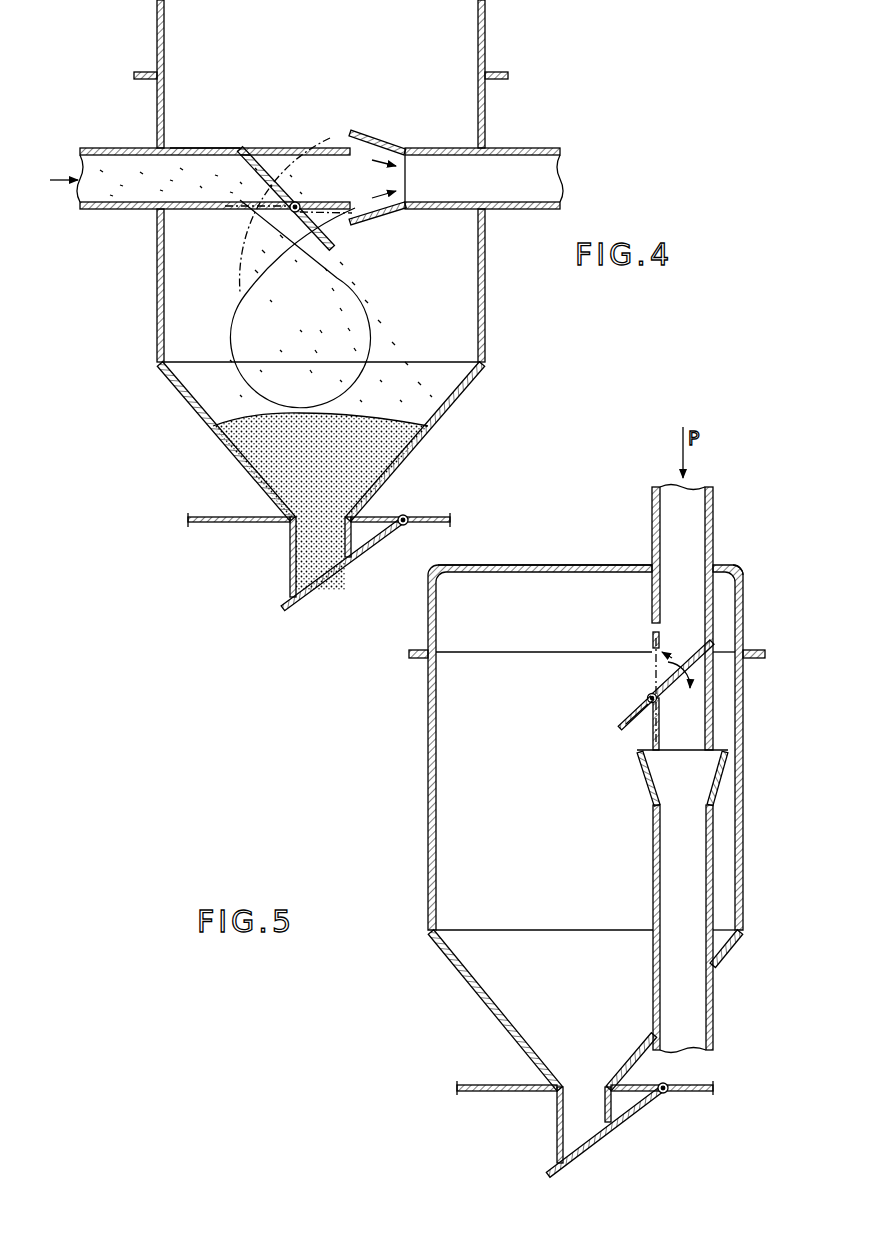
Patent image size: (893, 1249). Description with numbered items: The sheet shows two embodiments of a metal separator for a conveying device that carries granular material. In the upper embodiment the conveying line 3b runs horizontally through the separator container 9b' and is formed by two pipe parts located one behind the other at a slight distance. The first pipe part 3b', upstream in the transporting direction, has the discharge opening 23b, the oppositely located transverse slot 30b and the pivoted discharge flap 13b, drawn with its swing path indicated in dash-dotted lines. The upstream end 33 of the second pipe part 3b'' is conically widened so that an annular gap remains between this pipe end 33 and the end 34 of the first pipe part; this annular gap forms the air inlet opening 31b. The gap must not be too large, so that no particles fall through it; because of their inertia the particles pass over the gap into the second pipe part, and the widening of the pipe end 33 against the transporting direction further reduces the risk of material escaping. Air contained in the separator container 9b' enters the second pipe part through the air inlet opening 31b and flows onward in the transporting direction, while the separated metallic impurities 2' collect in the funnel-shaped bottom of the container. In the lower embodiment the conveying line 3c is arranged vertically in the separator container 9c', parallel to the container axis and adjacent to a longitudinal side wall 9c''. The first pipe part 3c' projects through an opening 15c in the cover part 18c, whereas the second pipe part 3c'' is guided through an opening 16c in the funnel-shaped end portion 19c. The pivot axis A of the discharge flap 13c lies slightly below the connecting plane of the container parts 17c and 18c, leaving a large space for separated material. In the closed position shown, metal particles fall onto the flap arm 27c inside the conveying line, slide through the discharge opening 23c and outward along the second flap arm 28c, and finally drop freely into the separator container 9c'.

In FIG. 4, the conveying line 3b is at (194, 210).
In FIG. 4, the first pipe part 3b' is at (205, 117).
In FIG. 4, the second pipe part 3b'' is at (484, 148).
In FIG. 4, the transverse slot 30b is at (240, 147).
In FIG. 4, the discharge flap 13b is at (242, 297).
In FIG. 4, the end of the first pipe part 34 is at (332, 138).
In FIG. 4, the upstream end of the second pipe part 33 is at (370, 134).
In FIG. 4, the separator container 9b' is at (341, 181).
In FIG. 4, the discharge opening 23b is at (226, 212).
In FIG. 4, the air inlet opening 31b is at (362, 226).
In FIG. 4, the metallic impurities 2' is at (320, 476).
In FIG. 5, the opening in the cover part 15c is at (651, 562).
In FIG. 5, the conveying line 3c is at (721, 618).
In FIG. 5, the cover part 18c is at (744, 583).
In FIG. 5, the first pipe part 3c' is at (725, 672).
In FIG. 5, the discharge opening 23c is at (652, 652).
In FIG. 5, the flap arm 27c is at (690, 672).
In FIG. 5, the discharge flap 13c is at (648, 694).
In FIG. 5, the separator container 9c' is at (607, 747).
In FIG. 5, the second flap arm 28c is at (621, 720).
In FIG. 5, the pivot axis A is at (640, 732).
In FIG. 5, the container part 17c is at (427, 826).
In FIG. 5, the longitudinal side wall 9c'' is at (720, 782).
In FIG. 5, the second pipe part 3c'' is at (728, 929).
In FIG. 5, the funnel-shaped end portion 19c is at (730, 952).
In FIG. 5, the opening in the funnel-shaped end portion 16c is at (715, 970).